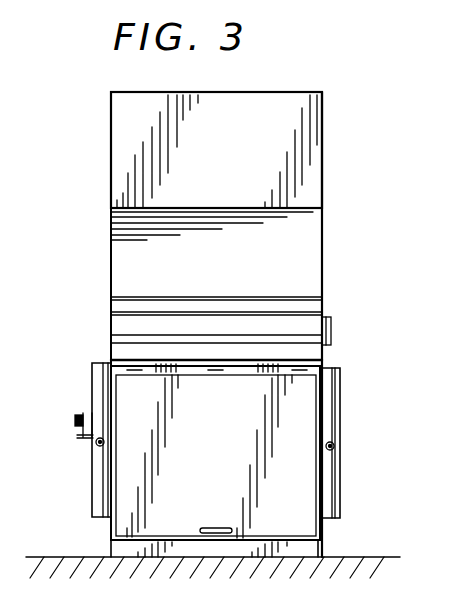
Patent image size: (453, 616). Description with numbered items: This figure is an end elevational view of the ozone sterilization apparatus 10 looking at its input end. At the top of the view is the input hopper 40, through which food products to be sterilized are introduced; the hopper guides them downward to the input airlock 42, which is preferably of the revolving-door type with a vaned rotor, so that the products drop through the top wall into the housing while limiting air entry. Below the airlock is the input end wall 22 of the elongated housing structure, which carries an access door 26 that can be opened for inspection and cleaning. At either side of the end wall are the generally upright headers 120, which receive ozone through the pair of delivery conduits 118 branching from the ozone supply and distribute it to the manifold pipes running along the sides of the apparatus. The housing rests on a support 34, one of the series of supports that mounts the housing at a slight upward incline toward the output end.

The ozone sterilization apparatus 10 is at (348, 372).
The input hopper 40 is at (323, 133).
The input airlock 42 is at (292, 329).
The input end wall 22 is at (122, 369).
The access door 26 is at (215, 453).
The delivery conduits 118 is at (97, 447).
The upright headers 120 is at (92, 503).
The support 34 is at (323, 548).